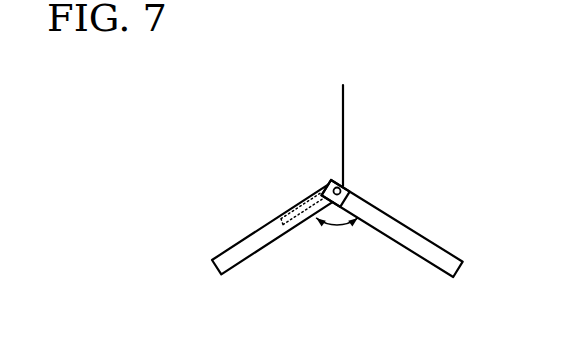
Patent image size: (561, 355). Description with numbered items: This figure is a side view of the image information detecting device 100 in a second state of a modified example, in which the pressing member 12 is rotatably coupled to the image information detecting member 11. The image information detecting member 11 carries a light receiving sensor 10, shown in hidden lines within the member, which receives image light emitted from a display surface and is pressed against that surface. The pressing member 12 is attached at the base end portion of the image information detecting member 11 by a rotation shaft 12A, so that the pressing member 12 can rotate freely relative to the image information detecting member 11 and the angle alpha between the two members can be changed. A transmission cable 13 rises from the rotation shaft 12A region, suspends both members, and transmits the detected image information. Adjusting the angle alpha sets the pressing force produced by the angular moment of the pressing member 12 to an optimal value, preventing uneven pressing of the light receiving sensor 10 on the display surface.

The image information detecting device 100 is at (275, 169).
The light receiving sensor 10 is at (299, 223).
The image information detecting member 11 is at (267, 224).
The pressing member 12 is at (411, 228).
The rotation shaft 12A is at (344, 190).
The transmission cable 13 is at (343, 121).